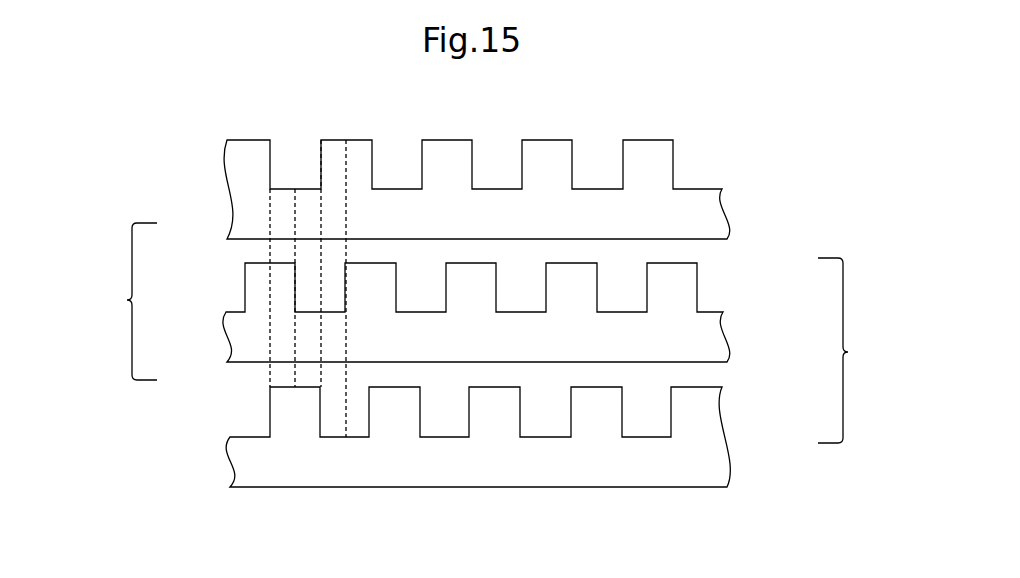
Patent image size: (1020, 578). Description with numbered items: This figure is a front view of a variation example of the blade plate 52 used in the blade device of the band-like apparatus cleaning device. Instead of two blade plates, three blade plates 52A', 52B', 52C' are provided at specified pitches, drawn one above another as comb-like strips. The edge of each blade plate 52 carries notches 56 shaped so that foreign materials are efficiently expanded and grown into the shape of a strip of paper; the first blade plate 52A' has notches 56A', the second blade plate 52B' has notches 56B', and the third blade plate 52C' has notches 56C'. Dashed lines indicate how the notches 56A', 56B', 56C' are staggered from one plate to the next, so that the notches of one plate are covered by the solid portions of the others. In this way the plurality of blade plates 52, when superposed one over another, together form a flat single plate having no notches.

The blade plate 52 is at (858, 352).
The first blade plate 52A' is at (518, 214).
The second blade plate 52B' is at (527, 312).
The third blade plate 52C' is at (526, 437).
The notch 56 is at (125, 300).
The notches of first blade plate 56A' is at (386, 234).
The notches of second blade plate 56B' is at (417, 263).
The notches of third blade plate 56C' is at (414, 339).